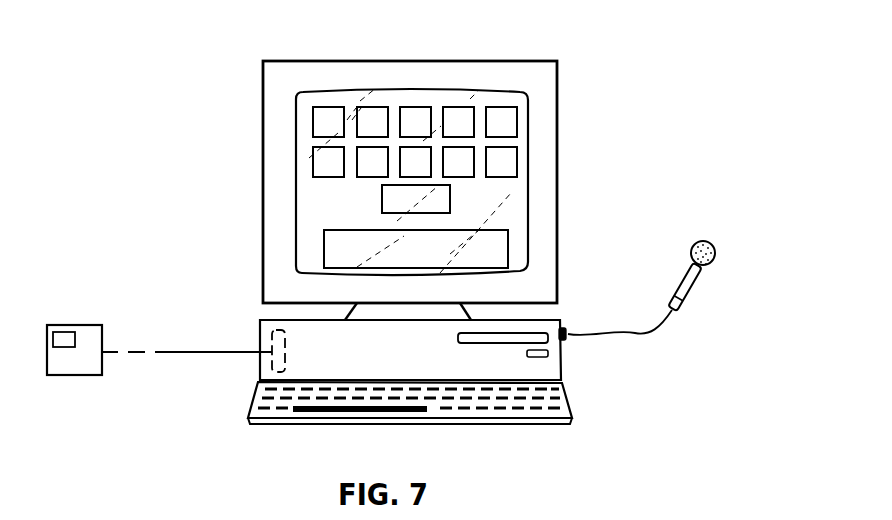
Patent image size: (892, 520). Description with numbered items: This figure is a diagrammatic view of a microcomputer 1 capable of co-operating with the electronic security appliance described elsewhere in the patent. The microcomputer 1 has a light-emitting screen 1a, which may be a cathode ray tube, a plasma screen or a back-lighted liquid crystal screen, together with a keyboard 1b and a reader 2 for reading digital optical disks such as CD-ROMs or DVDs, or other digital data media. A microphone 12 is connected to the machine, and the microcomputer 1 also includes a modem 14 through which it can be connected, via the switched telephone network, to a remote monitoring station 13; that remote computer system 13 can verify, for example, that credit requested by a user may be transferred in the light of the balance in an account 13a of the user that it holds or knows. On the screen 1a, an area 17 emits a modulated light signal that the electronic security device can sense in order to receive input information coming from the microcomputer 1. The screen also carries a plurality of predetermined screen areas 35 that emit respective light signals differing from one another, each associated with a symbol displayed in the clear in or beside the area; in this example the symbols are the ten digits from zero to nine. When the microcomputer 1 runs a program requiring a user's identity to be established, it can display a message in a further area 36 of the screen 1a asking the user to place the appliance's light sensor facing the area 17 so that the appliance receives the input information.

The microcomputer 1 is at (224, 305).
The light-emitting screen 1a is at (483, 140).
The keyboard 1b is at (467, 412).
The reader 2 is at (530, 335).
The microphone 12 is at (697, 278).
The remote monitoring station 13 is at (73, 358).
The account 13a is at (67, 335).
The modem 14 is at (275, 360).
The screen area 17 is at (432, 197).
The predetermined screen areas 35 is at (417, 107).
The message area 36 is at (490, 247).